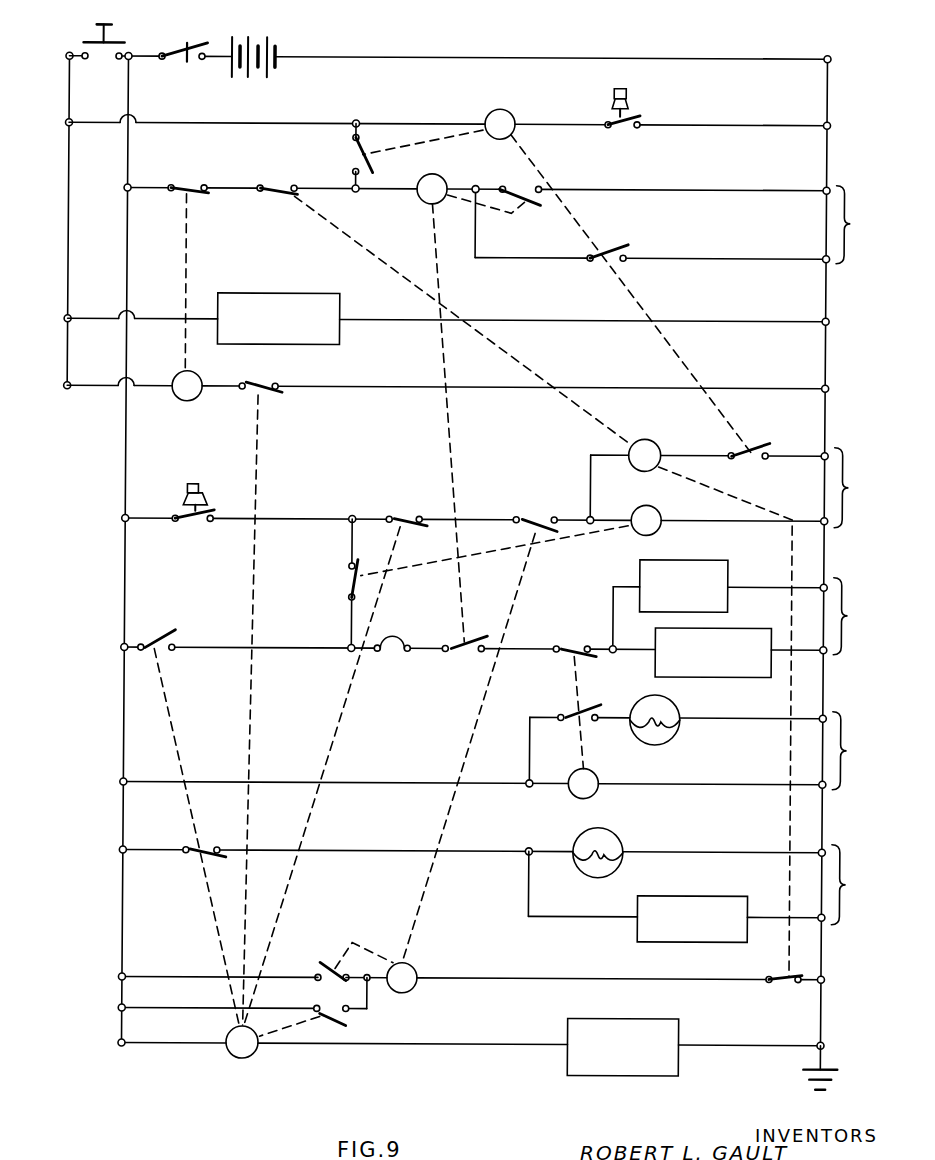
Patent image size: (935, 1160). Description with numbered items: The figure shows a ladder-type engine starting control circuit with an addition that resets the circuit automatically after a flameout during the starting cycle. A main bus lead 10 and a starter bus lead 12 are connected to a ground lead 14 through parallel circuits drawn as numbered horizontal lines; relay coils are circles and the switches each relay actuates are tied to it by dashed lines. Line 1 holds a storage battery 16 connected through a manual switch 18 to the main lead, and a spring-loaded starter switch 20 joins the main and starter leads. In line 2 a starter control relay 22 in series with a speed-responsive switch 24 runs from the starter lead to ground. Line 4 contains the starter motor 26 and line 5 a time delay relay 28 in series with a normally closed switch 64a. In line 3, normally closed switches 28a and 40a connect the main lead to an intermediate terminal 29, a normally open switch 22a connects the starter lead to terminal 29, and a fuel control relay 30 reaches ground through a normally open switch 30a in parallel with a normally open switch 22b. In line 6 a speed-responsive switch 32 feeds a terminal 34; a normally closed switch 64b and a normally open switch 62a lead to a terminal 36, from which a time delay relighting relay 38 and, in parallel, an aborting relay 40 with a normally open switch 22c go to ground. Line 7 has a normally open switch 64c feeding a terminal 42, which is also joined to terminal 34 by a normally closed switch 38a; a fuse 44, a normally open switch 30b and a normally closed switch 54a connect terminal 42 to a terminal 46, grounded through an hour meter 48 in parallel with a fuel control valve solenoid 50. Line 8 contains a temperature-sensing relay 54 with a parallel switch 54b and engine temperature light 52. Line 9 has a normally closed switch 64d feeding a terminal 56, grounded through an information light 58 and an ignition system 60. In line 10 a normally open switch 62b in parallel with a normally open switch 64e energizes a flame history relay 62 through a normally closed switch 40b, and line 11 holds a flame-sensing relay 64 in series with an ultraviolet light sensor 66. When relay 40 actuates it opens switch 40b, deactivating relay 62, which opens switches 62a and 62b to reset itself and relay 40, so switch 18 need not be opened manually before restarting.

The horizontal line 1 is at (474, 60).
The horizontal line 2 is at (473, 127).
The horizontal line 3 is at (511, 223).
The horizontal line 4 is at (472, 322).
The horizontal line 5 is at (471, 389).
The horizontal line 6 is at (503, 486).
The horizontal line 7 is at (500, 614).
The horizontal line 8 is at (497, 748).
The horizontal line 9 is at (500, 883).
The main bus lead 10 is at (141, 51).
The horizontal line 11 is at (498, 1061).
The starter bus lead 12 is at (66, 52).
The ground lead 14 is at (835, 55).
The storage battery 16 is at (281, 50).
The manual switch 18 is at (190, 70).
The spring-loaded starter switch 20 is at (112, 42).
The starter control relay 22 is at (507, 113).
The normally open switch 22a is at (396, 154).
The normally open switch 22b is at (626, 248).
The normally open switch 22c is at (752, 456).
The speed-responsive switch 24 is at (631, 104).
The starter motor 26 is at (279, 284).
The time delay relay 28 is at (200, 378).
The normally closed switch 28a is at (186, 188).
The intermediate terminal 29 is at (352, 194).
The fuel control relay 30 is at (432, 171).
The normally open switch 30a is at (530, 179).
The normally open switch 30b is at (463, 653).
The speed-responsive switch 32 is at (218, 468).
The intermediate terminal 34 is at (357, 505).
The intermediate terminal 36 is at (598, 517).
The time delay relighting relay 38 is at (661, 510).
The normally closed switch 38a is at (350, 574).
The aborting relay 40 is at (660, 441).
The normally closed switch 40a is at (270, 173).
The normally closed switch 40b is at (781, 999).
The intermediate terminal 42 is at (351, 653).
The fuse 44 is at (389, 649).
The intermediate terminal 46 is at (616, 653).
The hour meter 48 is at (731, 571).
The fuel control valve solenoid 50 is at (735, 677).
The engine temperature light 52 is at (673, 733).
The temperature-sensing relay 54 is at (602, 778).
The normally closed switch 54a is at (572, 646).
The switch 54b is at (597, 730).
The intermediate terminal 56 is at (545, 843).
The information light 58 is at (622, 849).
The ignition system 60 is at (700, 942).
The flame history relay 62 is at (418, 971).
The normally open switch 62a is at (548, 506).
The normally open switch 62b is at (325, 951).
The flame-sensing relay 64 is at (250, 1059).
The normally closed switch 64a is at (279, 373).
The normally closed switch 64b is at (418, 506).
The normally open switch 64c is at (190, 623).
The normally closed switch 64d is at (204, 859).
The normally open switch 64e is at (352, 1021).
The ultraviolet light sensor 66 is at (622, 1077).